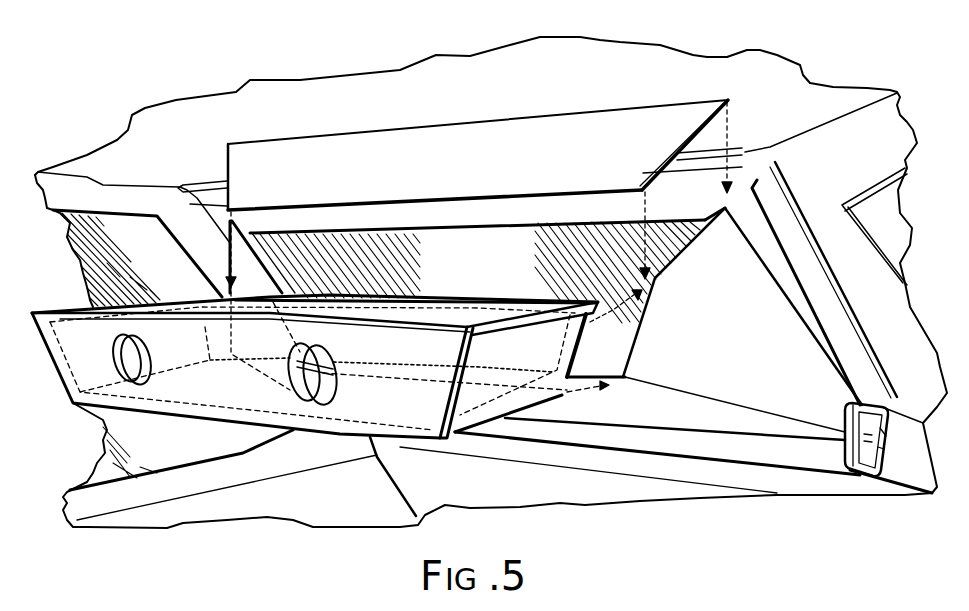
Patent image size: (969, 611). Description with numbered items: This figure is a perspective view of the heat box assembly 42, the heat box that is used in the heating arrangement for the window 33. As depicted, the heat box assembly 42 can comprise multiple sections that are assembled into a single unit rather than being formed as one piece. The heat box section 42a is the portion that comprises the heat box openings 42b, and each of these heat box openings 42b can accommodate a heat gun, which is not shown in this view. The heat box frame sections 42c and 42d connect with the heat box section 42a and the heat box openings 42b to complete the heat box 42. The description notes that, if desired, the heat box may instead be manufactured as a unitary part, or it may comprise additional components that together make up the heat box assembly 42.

The window 33 is at (383, 258).
The heat box assembly 42 is at (540, 100).
The heat box section 42a is at (70, 353).
The heat box openings 42b is at (148, 362).
The heat box frame section 42c is at (458, 172).
The heat box frame section 42d is at (245, 277).